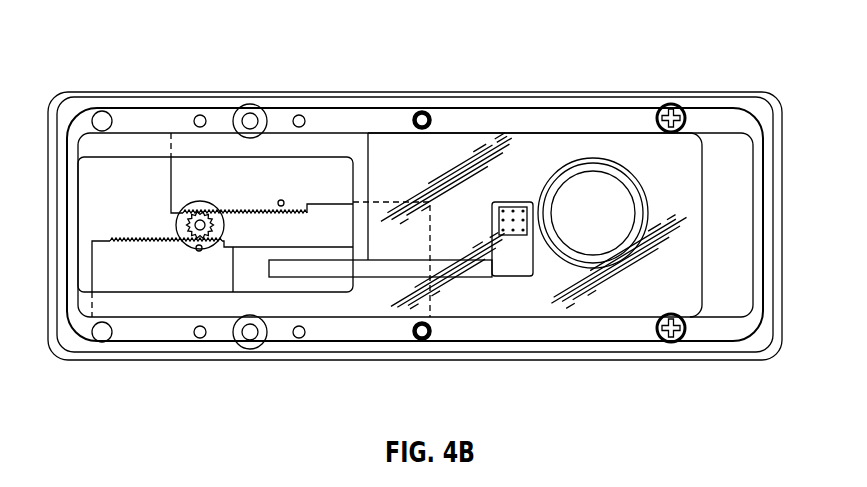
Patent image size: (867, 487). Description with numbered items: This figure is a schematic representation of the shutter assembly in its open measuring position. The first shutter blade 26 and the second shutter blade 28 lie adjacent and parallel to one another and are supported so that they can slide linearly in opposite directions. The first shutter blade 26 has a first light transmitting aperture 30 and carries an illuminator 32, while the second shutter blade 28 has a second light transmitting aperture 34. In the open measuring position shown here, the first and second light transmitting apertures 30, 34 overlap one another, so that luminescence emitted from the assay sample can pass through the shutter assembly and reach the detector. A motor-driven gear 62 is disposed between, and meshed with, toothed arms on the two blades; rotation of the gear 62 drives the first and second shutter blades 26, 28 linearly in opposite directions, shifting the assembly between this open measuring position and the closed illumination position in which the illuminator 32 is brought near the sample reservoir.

The first shutter blade 26 is at (137, 280).
The second shutter blade 28 is at (182, 188).
The first light transmitting aperture 30 is at (614, 157).
The illuminator 32 is at (513, 250).
The second light transmitting aperture 34 is at (590, 197).
The gear 62 is at (177, 227).